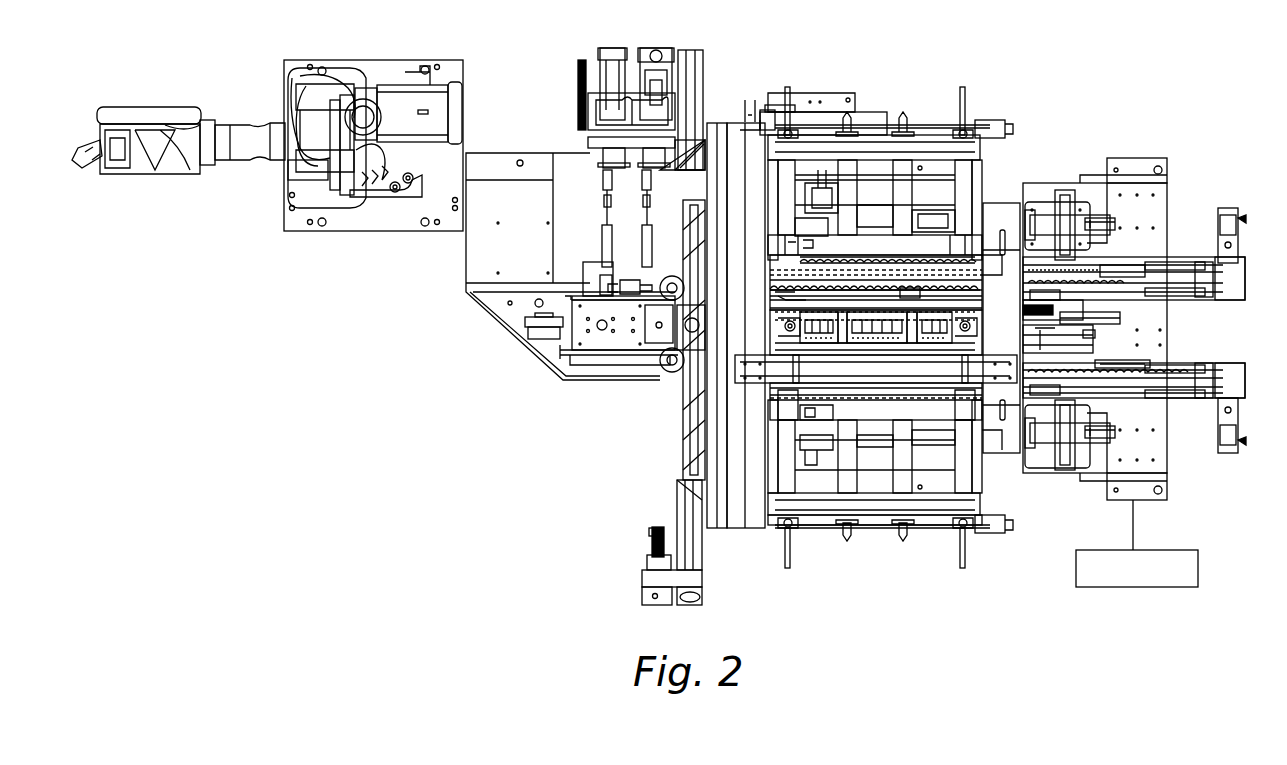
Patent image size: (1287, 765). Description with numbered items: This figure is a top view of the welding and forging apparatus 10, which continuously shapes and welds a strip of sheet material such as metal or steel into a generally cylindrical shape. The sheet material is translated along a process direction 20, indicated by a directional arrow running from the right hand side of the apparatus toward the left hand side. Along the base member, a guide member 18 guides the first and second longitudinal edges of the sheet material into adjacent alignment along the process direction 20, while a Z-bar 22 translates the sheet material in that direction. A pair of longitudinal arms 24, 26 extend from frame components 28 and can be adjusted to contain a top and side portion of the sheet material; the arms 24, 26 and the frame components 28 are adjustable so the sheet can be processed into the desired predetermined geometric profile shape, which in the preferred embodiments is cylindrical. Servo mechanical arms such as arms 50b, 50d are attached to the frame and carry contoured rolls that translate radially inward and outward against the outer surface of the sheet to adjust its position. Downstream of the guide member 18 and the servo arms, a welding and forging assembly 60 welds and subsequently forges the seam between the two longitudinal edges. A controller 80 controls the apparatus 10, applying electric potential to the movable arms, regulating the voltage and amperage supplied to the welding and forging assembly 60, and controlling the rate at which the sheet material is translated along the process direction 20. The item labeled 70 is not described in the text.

The welding and forging apparatus 10 is at (679, 320).
The guide member 18 is at (1135, 366).
The process direction 20 is at (1011, 319).
The Z-bar 22 is at (1097, 325).
The longitudinal arm 24 is at (885, 343).
The longitudinal arm 26 is at (825, 313).
The frame components 28 is at (1002, 223).
The servo mechanical arm 50b is at (698, 103).
The servo mechanical arm 50d is at (678, 513).
The welding and forging assembly 60 is at (527, 372).
The robot 70 is at (371, 58).
The controller 80 is at (1100, 587).